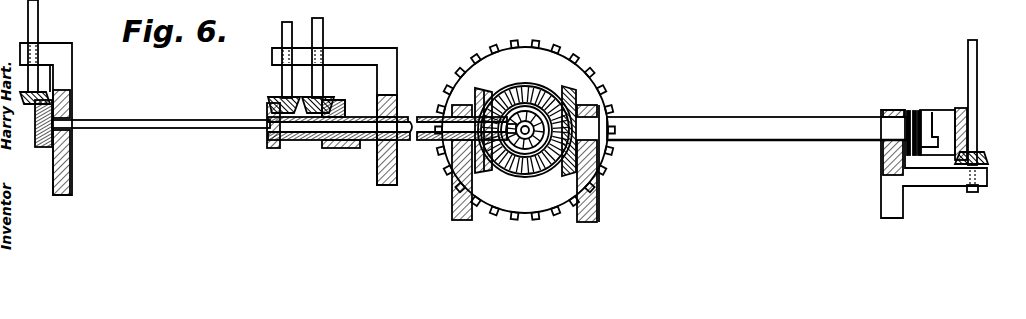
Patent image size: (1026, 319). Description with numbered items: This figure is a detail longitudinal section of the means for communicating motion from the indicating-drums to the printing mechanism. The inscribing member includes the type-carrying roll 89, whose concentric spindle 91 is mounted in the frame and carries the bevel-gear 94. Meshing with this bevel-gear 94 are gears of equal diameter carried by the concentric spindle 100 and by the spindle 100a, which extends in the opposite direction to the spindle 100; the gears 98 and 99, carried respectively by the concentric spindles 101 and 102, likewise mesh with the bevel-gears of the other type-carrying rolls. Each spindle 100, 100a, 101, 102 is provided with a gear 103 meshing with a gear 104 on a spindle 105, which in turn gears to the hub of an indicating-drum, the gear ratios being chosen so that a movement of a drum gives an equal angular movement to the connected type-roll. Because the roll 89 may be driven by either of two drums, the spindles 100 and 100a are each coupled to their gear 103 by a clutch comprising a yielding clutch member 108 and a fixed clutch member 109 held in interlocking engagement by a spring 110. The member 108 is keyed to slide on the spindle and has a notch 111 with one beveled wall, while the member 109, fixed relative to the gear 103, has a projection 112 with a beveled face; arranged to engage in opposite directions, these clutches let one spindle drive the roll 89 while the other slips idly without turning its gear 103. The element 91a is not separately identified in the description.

The type-carrying roll 89 is at (552, 63).
The spindle 91 is at (480, 160).
The bevel gear 91a is at (566, 162).
The bevel-gear 94 is at (522, 172).
The gear 98 is at (503, 104).
The gear 99 is at (523, 126).
The spindle 100 is at (424, 143).
The spindle 100a is at (661, 133).
The spindle 101 is at (296, 140).
The spindle 102 is at (150, 124).
The gear 103 is at (44, 150).
The gear 104 is at (32, 105).
The spindle 105 is at (35, 12).
The yielding clutch member 108 is at (927, 150).
The fixed clutch member 109 is at (327, 143).
The spring 110 is at (367, 147).
The notch 111 is at (926, 130).
The projection 112 is at (934, 130).